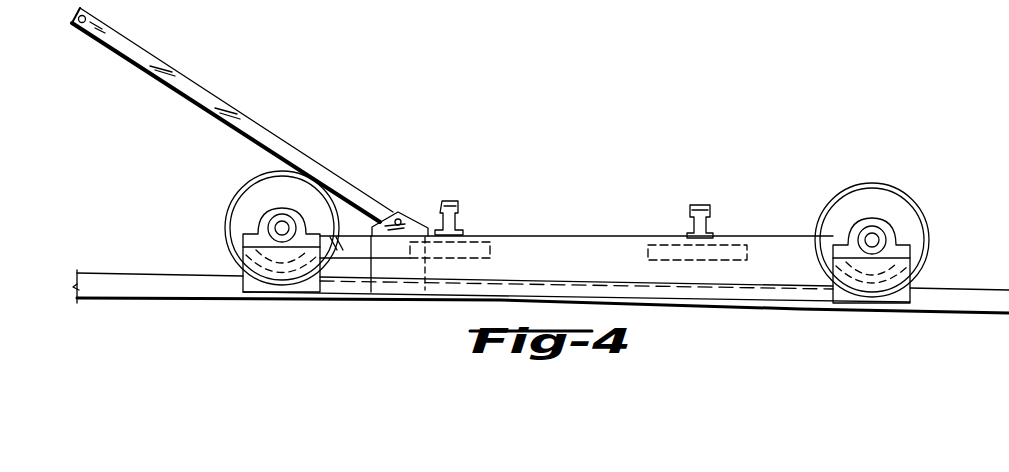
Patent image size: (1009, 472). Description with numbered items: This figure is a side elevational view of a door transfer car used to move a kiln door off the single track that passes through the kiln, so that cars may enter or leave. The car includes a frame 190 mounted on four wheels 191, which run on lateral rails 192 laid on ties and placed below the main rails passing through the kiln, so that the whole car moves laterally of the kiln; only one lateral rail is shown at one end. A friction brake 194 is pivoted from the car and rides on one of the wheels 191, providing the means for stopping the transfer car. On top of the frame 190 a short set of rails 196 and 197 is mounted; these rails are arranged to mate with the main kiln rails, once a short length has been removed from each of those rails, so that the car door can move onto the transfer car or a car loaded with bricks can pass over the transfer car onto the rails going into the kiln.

The frame 190 is at (567, 250).
The wheels 191 is at (242, 215).
The lateral rails 192 is at (952, 312).
The friction brake 194 is at (207, 97).
The rail 196 is at (460, 210).
The rail 197 is at (710, 212).